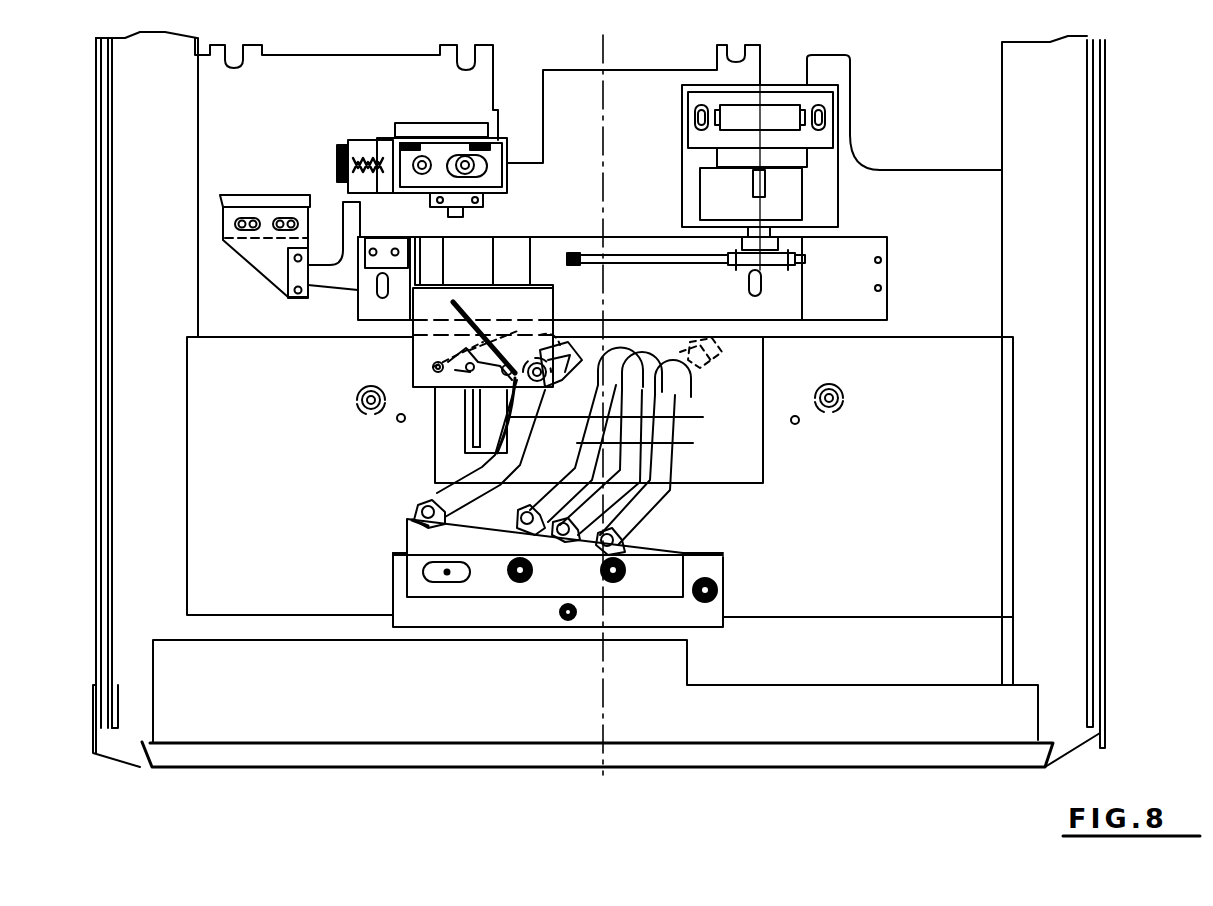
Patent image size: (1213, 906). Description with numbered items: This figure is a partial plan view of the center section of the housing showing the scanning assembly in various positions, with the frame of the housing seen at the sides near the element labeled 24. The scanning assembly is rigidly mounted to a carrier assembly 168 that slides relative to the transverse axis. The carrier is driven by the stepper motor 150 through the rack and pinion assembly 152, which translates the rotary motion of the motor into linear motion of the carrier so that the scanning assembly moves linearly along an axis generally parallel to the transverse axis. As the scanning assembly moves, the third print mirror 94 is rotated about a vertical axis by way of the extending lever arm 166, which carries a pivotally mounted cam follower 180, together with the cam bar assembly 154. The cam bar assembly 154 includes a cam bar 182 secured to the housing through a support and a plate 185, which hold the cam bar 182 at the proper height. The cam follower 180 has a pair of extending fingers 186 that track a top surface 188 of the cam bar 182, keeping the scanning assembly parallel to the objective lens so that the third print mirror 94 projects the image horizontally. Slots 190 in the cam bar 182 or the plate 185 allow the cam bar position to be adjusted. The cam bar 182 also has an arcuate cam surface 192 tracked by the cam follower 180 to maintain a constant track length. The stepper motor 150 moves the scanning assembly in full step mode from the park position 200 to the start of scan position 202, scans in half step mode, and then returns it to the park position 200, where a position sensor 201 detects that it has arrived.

The side frame panel 24 is at (237, 160).
The position sensor 201 is at (410, 130).
The stepper motor 150 is at (702, 187).
The rack and pinion assembly 152 is at (785, 248).
The carrier assembly 168 is at (368, 327).
The third print mirror 94 is at (433, 367).
The extending lever arm 166 is at (480, 467).
The cam follower 180 is at (427, 513).
The park position 200 is at (425, 520).
The top surface 188 is at (428, 542).
The slots 190 is at (567, 625).
The cam bar 182 is at (420, 583).
The cam bar assembly 154 is at (427, 612).
The start of scan position 202 is at (523, 522).
The extending fingers 186 is at (597, 540).
The plate 185 is at (645, 612).
The cam surface 192 is at (625, 548).